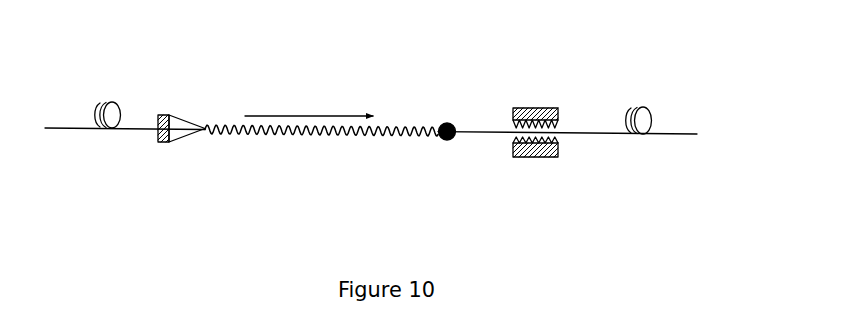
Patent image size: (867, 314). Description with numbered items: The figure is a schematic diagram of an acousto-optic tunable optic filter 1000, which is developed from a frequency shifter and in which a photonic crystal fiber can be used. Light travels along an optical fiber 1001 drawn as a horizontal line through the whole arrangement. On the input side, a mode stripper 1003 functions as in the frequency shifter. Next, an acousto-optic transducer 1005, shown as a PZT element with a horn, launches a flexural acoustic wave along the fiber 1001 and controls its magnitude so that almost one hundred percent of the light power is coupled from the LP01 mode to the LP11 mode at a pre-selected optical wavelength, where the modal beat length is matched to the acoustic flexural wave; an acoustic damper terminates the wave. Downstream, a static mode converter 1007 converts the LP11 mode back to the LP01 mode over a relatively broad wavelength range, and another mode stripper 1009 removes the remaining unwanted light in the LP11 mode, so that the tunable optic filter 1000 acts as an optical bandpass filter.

The tunable optic filter 1000 is at (371, 149).
The optical fiber 1001 is at (337, 132).
The mode stripper 1003 is at (95, 117).
The acousto-optic transducer 1005 is at (169, 168).
The static mode converter 1007 is at (533, 108).
The mode stripper 1009 is at (635, 135).